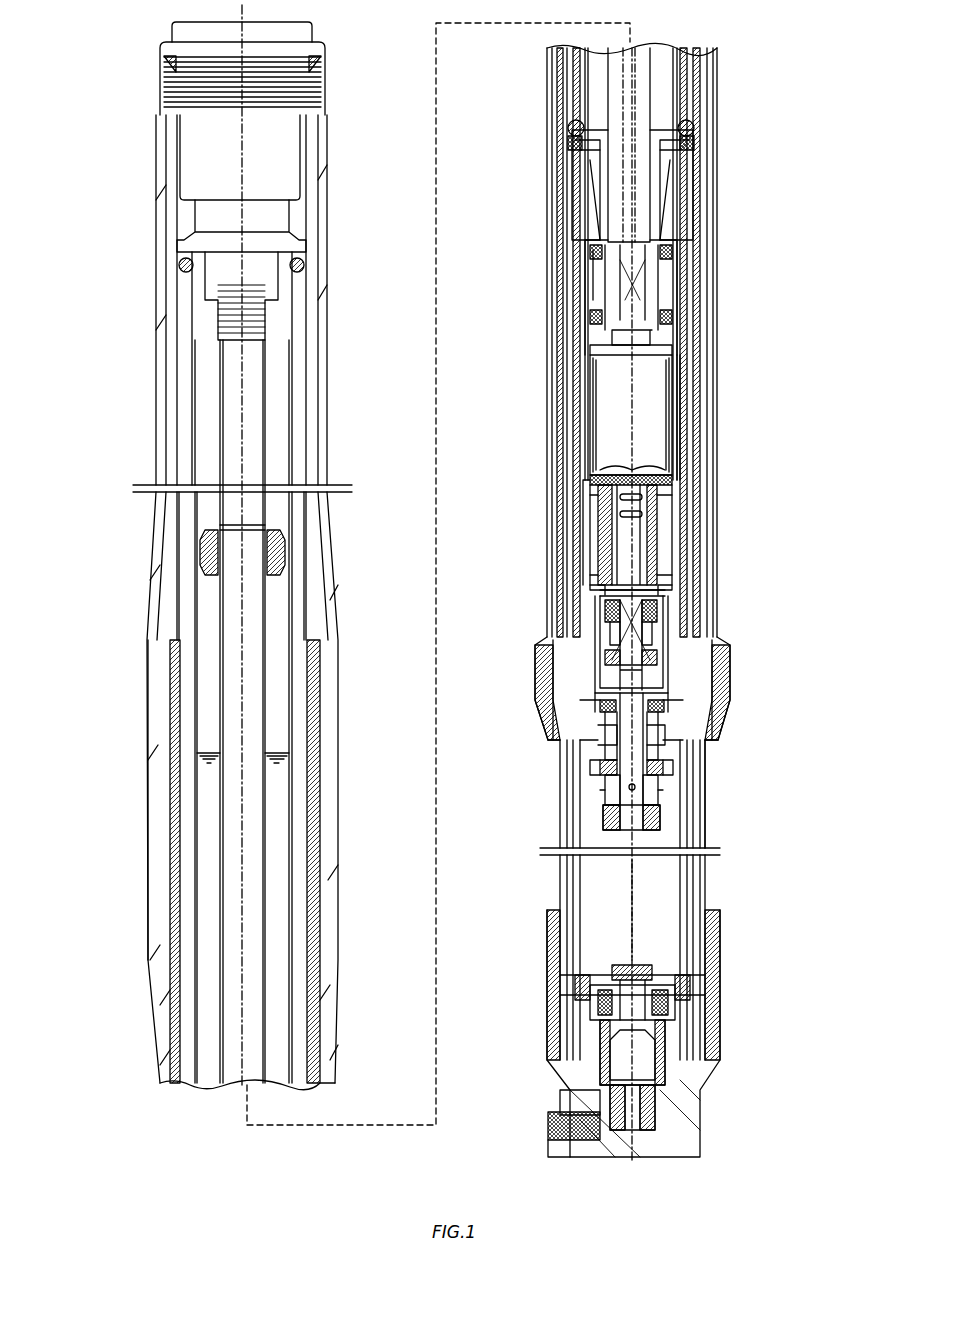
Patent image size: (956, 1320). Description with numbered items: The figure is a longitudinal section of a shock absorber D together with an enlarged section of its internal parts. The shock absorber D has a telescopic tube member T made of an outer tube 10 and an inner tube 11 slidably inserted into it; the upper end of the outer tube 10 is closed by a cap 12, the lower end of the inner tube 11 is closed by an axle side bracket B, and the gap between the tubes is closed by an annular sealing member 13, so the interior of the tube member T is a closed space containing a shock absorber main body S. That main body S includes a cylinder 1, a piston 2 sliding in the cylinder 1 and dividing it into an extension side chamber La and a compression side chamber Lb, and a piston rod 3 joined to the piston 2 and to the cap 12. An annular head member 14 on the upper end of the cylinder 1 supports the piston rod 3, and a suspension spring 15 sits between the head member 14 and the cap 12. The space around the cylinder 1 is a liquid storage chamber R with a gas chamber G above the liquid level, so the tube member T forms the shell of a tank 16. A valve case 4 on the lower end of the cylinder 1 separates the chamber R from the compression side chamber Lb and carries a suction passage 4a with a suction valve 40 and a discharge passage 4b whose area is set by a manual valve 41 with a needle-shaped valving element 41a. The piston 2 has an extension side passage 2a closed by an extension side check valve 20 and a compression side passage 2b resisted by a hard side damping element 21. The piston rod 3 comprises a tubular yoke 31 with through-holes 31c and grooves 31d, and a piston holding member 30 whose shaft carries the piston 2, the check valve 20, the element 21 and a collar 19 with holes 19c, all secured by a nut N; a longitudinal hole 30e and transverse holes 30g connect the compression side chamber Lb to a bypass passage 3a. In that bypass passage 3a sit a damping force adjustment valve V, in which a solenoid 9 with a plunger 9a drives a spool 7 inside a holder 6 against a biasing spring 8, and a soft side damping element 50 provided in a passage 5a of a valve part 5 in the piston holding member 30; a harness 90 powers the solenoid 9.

The shock absorber D is at (148, 50).
The tube member T is at (148, 695).
The liquid storage chamber R is at (208, 833).
The gas chamber G is at (200, 408).
The shock absorber main body S is at (565, 180).
The extension side chamber La is at (582, 300).
The compression side chamber Lb is at (640, 914).
The damping force adjustment valve V is at (685, 488).
The nut N is at (655, 815).
The axle side bracket B is at (720, 935).
The cylinder 1 is at (568, 868).
The piston 2 is at (558, 740).
The extension side passage 2a is at (590, 755).
The compression side passage 2b is at (660, 735).
The piston rod 3 is at (300, 765).
The bypass passage 3a is at (665, 590).
The valve case 4 is at (670, 985).
The suction passage 4a is at (560, 990).
The discharge passage 4b is at (632, 1062).
The valve body 5 is at (672, 635).
The passage 5a is at (600, 640).
The holder 6 is at (595, 540).
The spool 7 is at (670, 540).
The biasing spring 8 is at (595, 588).
The solenoid 9 is at (596, 408).
The plunger 9a is at (630, 470).
The outer tube 10 is at (326, 385).
The inner tube 11 is at (720, 798).
The cap 12 is at (325, 96).
The sealing member 13 is at (675, 712).
The head member 14 is at (698, 175).
The suspension spring 15 is at (700, 128).
The tank 16 is at (170, 885).
The collar 19 is at (600, 825).
The holes 19c is at (603, 800).
The extension side check valve 20 is at (598, 782).
The hard side damping element 21 is at (668, 705).
The piston holding member 30 is at (578, 700).
The longitudinal hole 30e is at (700, 830).
The transverse holes 30g is at (635, 785).
The yoke 31 is at (685, 330).
The through-holes 31c is at (578, 505).
The grooves 31d is at (690, 395).
The suction valve 40 is at (600, 975).
The manual valve 41 is at (552, 1128).
The valving element 41a is at (575, 1108).
The soft side damping element 50 is at (605, 620).
The harness 90 is at (630, 283).